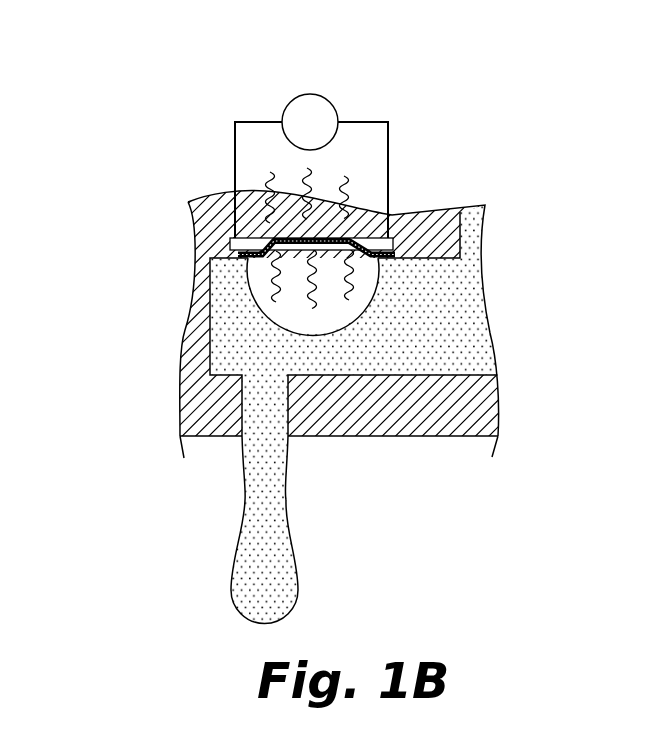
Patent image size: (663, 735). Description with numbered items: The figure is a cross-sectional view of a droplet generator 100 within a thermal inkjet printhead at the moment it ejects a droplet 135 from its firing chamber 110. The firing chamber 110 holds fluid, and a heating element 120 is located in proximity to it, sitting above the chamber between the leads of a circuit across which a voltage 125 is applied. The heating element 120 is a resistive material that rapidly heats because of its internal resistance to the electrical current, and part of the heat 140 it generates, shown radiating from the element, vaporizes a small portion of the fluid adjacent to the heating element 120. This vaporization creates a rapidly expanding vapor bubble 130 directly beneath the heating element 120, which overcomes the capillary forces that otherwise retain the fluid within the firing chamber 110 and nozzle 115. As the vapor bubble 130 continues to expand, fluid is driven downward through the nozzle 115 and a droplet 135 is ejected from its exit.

The droplet generator 100 is at (117, 71).
The firing chamber 110 is at (331, 396).
The nozzle 115 is at (275, 392).
The heating element 120 is at (388, 257).
The voltage 125 is at (283, 108).
The vapor bubble 130 is at (353, 323).
The droplet 135 is at (300, 590).
The heat 140 is at (257, 282).